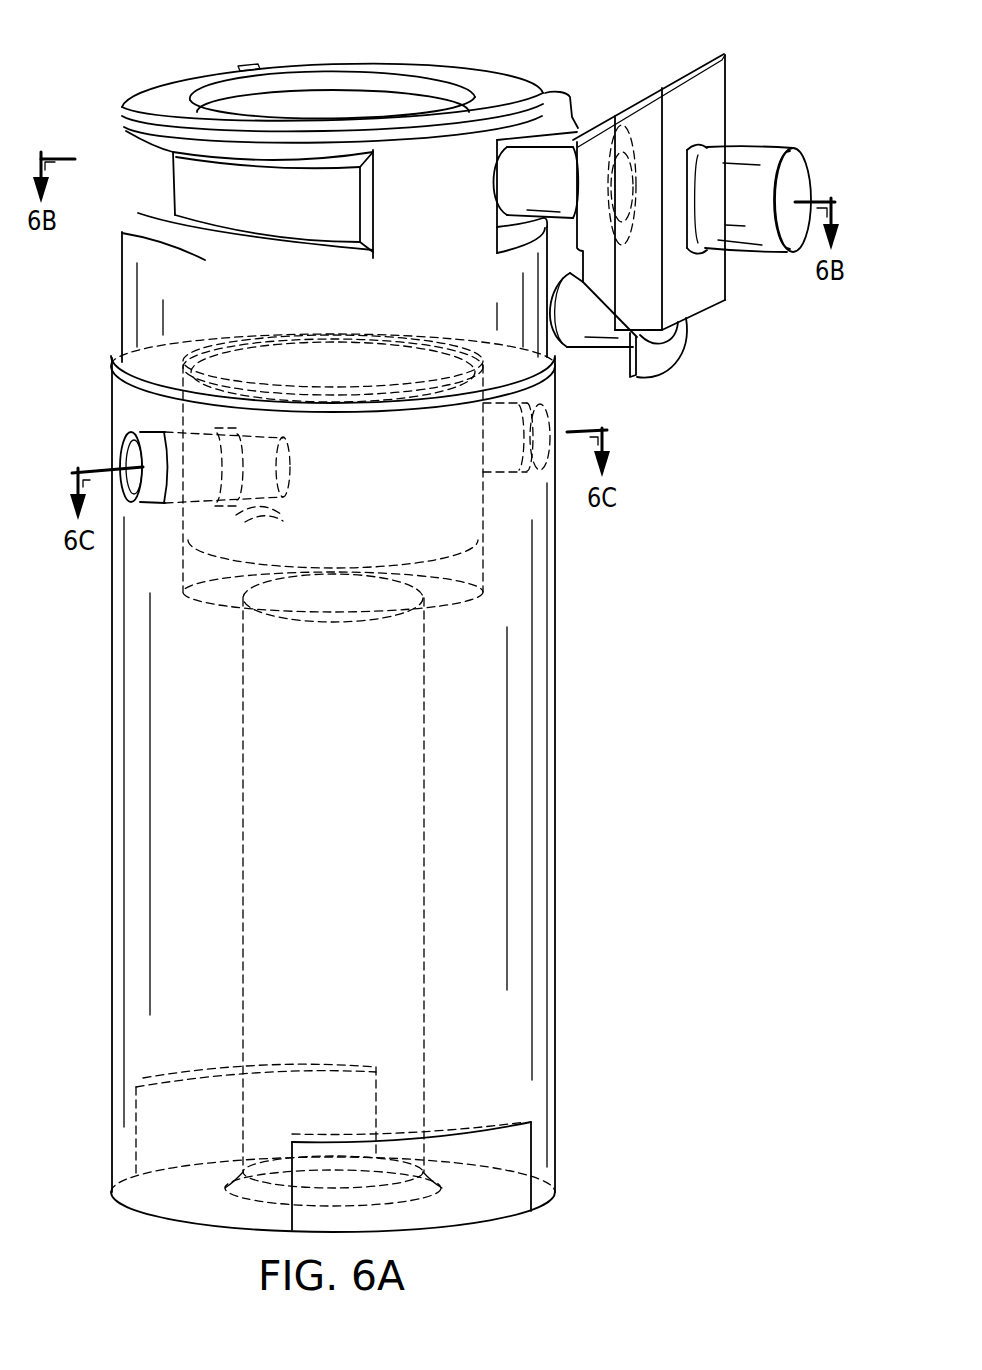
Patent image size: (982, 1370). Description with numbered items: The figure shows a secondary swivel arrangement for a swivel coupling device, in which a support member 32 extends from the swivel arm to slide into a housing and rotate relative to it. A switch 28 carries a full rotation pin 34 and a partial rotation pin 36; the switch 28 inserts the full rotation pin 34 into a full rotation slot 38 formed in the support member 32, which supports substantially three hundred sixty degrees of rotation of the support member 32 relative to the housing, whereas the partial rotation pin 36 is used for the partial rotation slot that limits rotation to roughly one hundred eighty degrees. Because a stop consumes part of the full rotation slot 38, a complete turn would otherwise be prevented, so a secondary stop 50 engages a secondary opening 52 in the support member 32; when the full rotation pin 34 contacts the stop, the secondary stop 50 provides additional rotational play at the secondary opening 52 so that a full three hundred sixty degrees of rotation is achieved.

The switch 28 is at (754, 157).
The support member 32 is at (472, 68).
The full rotation pin 34 is at (553, 157).
The partial rotation pin 36 is at (585, 348).
The full rotation slot 38 is at (190, 183).
The secondary stop 50 is at (140, 457).
The secondary opening 52 is at (283, 520).